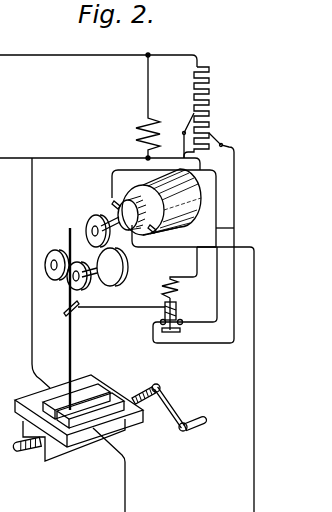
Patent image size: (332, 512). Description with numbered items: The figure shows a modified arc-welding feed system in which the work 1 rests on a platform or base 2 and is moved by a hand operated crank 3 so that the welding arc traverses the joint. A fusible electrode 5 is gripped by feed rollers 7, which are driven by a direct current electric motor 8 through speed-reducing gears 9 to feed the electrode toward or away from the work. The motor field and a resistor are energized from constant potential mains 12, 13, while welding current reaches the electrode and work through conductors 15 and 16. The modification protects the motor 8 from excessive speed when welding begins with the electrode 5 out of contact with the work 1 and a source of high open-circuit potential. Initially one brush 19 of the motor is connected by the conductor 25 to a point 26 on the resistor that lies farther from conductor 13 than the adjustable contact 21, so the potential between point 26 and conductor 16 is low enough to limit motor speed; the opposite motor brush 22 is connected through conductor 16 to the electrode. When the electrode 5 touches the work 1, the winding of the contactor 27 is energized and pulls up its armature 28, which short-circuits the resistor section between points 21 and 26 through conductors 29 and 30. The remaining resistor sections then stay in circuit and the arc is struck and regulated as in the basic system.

The work 1 is at (97, 383).
The platform or base 2 is at (76, 449).
The hand operated crank 3 is at (175, 403).
The fusible electrode 5 is at (73, 338).
The feed rollers 7 is at (55, 281).
The direct current electric motor 8 is at (187, 193).
The speed-reducing gears 9 is at (126, 278).
The constant potential main 12 is at (49, 54).
The constant potential main 13 is at (62, 156).
The conductor 15 is at (126, 488).
The conductor 16 is at (256, 433).
The brush 19 is at (112, 206).
The adjustable contact 21 is at (210, 128).
The motor brush 22 is at (152, 234).
The conductor 25 is at (112, 176).
The point 26 is at (193, 116).
The contactor 27 is at (178, 289).
The armature 28 is at (177, 313).
The conductor 29 is at (235, 207).
The conductor 30 is at (228, 228).